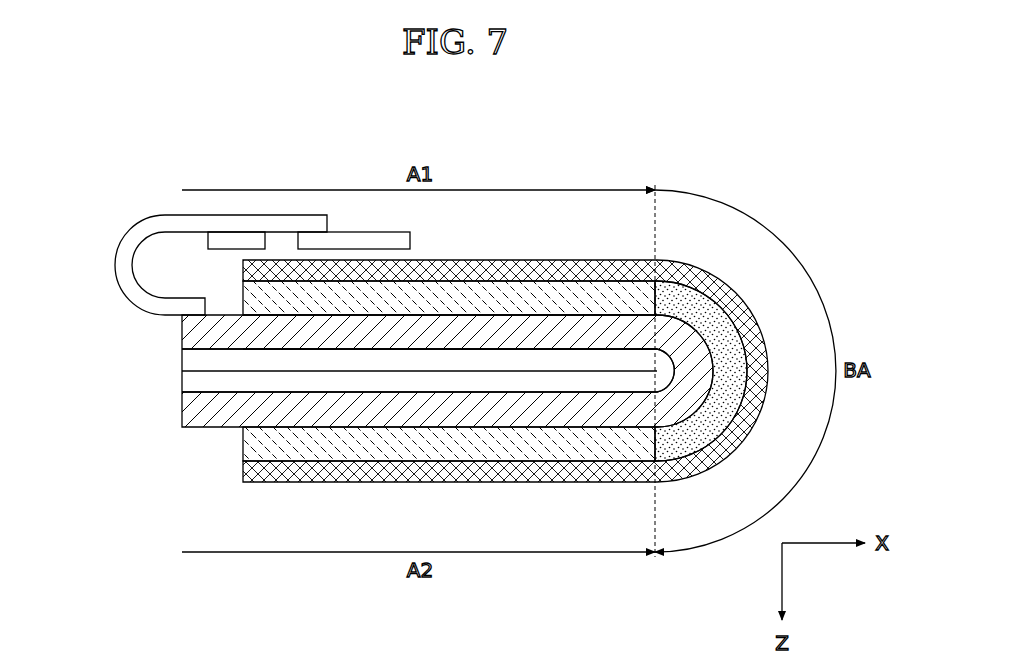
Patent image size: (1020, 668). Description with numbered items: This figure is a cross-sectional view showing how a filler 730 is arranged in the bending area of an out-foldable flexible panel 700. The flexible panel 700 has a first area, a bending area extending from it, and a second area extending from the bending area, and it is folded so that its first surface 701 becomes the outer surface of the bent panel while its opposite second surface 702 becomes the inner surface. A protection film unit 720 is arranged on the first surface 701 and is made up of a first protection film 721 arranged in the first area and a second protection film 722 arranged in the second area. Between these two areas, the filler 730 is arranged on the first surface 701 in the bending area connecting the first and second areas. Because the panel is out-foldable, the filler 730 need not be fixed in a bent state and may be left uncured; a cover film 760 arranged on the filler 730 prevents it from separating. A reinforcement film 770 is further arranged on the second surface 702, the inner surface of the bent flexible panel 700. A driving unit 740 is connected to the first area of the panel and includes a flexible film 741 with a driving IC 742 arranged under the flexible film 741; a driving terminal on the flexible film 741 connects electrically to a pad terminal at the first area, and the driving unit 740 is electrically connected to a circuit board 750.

The flexible panel 700 is at (190, 333).
The first surface 701 is at (563, 312).
The second surface 702 is at (596, 352).
The protection film unit 720 is at (358, 386).
The first protection film 721 is at (298, 303).
The second protection film 722 is at (253, 443).
The filler 730 is at (698, 458).
The driving unit 740 is at (210, 208).
The flexible film 741 is at (140, 233).
The driving IC 742 is at (229, 193).
The circuit board 750 is at (392, 233).
The cover film 760 is at (278, 482).
The reinforcement film 770 is at (343, 380).